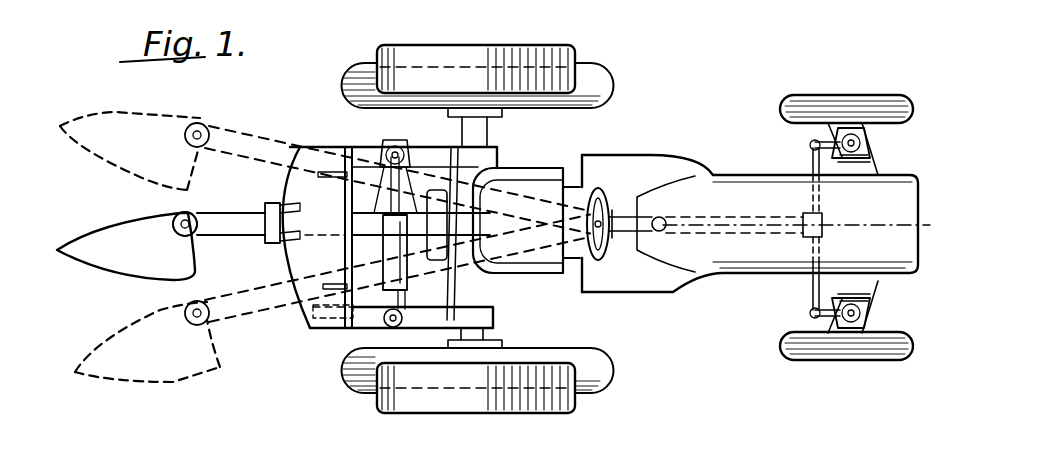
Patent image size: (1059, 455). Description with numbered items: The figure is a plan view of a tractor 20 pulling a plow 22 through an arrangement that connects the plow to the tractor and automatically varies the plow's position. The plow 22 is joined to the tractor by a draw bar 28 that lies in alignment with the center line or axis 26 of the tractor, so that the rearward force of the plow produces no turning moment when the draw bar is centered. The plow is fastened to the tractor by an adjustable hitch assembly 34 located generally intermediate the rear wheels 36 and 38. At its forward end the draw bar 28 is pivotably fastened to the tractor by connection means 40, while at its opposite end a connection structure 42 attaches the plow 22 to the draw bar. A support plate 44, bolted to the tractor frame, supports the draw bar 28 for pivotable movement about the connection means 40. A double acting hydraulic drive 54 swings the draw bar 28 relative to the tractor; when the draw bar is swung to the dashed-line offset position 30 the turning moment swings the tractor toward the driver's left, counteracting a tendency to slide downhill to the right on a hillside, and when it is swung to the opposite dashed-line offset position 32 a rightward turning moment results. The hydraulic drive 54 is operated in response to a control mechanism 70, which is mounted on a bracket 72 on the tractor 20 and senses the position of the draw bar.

The tractor 20 is at (676, 132).
The plow 22 is at (82, 127).
The center line or axis 26 is at (750, 227).
The draw bar 28 is at (238, 230).
The offset position 30 is at (190, 117).
The offset position 32 is at (181, 392).
The hitch assembly 34 is at (341, 148).
The rear wheel 36 is at (600, 77).
The rear wheel 38 is at (597, 387).
The connection means 40 is at (657, 230).
The connection structure 42 is at (190, 220).
The support plate 44 is at (390, 289).
The double acting hydraulic drive 54 is at (397, 290).
The control mechanism 70 is at (454, 150).
The bracket 72 is at (476, 284).